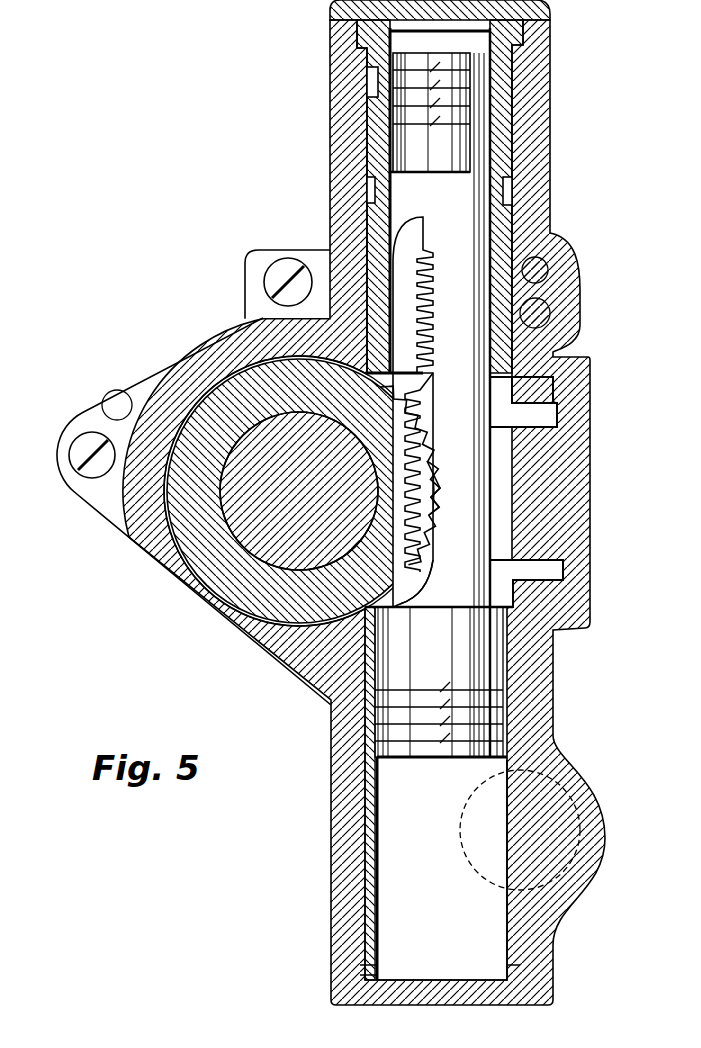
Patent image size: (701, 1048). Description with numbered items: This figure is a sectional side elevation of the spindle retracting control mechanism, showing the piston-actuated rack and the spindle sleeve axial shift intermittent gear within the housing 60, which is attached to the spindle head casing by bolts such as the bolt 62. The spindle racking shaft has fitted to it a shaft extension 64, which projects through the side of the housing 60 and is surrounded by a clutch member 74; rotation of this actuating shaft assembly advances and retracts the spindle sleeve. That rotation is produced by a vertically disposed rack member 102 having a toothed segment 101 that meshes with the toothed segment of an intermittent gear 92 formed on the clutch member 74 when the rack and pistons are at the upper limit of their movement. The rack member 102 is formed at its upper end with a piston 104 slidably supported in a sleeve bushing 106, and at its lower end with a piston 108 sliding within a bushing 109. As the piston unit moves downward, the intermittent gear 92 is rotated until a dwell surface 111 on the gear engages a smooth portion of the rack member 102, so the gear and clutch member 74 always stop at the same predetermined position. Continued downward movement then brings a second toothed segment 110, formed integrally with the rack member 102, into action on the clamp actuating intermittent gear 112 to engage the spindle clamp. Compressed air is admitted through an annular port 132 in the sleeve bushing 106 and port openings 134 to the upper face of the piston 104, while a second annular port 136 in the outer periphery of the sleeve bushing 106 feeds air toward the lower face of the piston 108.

The housing 60 is at (238, 332).
The bolt 62 is at (78, 447).
The shaft extension 64 is at (243, 540).
The clutch member 74 is at (268, 607).
The intermittent gear 92 is at (428, 498).
The toothed segment 101 is at (432, 557).
The rack member 102 is at (482, 253).
The piston 104 is at (475, 143).
The sleeve bushing 106 is at (508, 212).
The piston 108 is at (448, 750).
The bushing 109 is at (507, 905).
The second toothed segment 110 is at (412, 262).
The dwell surface 111 is at (390, 402).
The intermittent gear 112 is at (398, 444).
The annular port 132 is at (375, 82).
The port openings 134 is at (378, 36).
The annular port 136 is at (368, 188).